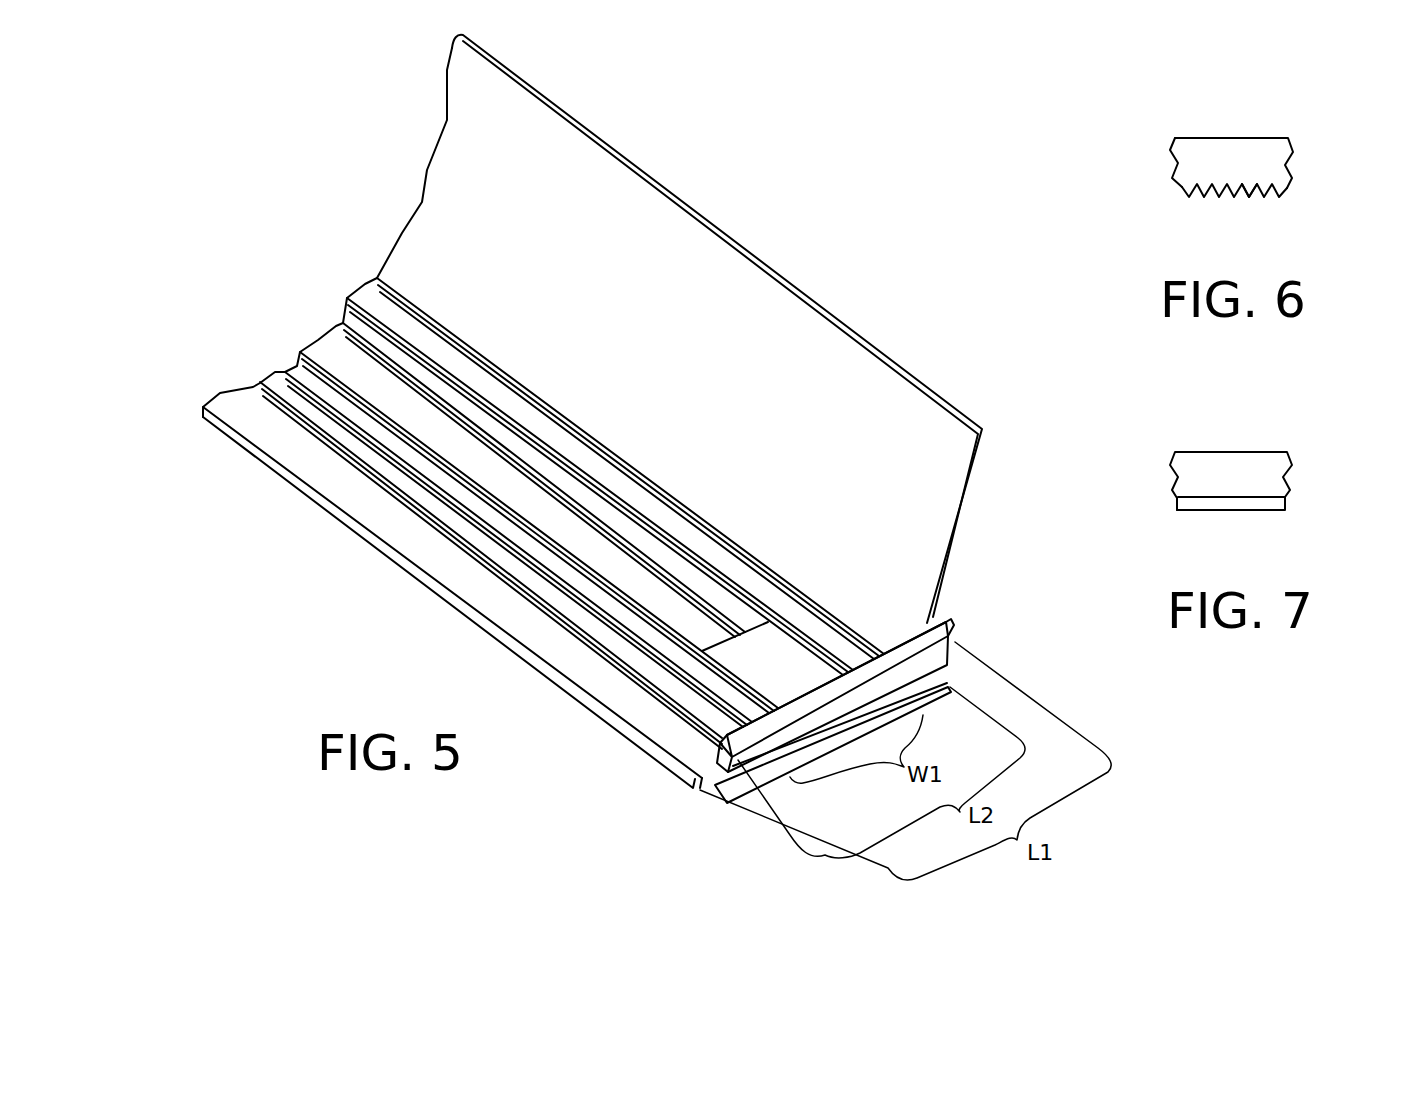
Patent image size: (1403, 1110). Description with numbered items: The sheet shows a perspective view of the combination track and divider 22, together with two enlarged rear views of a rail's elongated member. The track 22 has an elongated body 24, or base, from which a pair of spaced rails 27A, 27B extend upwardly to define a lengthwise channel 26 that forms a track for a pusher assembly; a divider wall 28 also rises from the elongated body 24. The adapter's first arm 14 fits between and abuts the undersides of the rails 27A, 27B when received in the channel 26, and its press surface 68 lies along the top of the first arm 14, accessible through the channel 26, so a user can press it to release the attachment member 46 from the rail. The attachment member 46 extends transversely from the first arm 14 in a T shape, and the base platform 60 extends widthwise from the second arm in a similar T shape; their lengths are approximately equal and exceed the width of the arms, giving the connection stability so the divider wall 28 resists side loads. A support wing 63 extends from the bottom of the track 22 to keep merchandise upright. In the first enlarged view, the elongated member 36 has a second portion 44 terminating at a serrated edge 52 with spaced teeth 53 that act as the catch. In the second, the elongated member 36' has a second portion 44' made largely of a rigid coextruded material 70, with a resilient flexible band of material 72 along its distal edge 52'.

In FIG. 5, the first arm 14 is at (768, 643).
In FIG. 5, the combination track and divider 22 is at (457, 608).
In FIG. 5, the elongated body 24 is at (325, 468).
In FIG. 5, the channel 26 is at (658, 595).
In FIG. 5, the rail 27A is at (432, 505).
In FIG. 5, the rail 27B is at (537, 427).
In FIG. 5, the divider wall 28 is at (723, 280).
In FIG. 5, the attachment member 46 is at (892, 660).
In FIG. 5, the base platform 60 is at (718, 788).
In FIG. 5, the support wing 63 is at (937, 613).
In FIG. 5, the press surface 68 is at (812, 677).
In FIG. 6, the elongated member 36 is at (1245, 125).
In FIG. 6, the second portion 44 is at (1277, 150).
In FIG. 6, the edge 52 is at (1221, 223).
In FIG. 6, the teeth 53 is at (1250, 188).
In FIG. 7, the elongated member 36' is at (1248, 444).
In FIG. 7, the second portion 44' is at (1281, 453).
In FIG. 7, the first more rigid coextruded material 70 is at (1275, 482).
In FIG. 7, the resilient flexible band of material 72 is at (1188, 502).
In FIG. 7, the distal edge 52' is at (1259, 538).